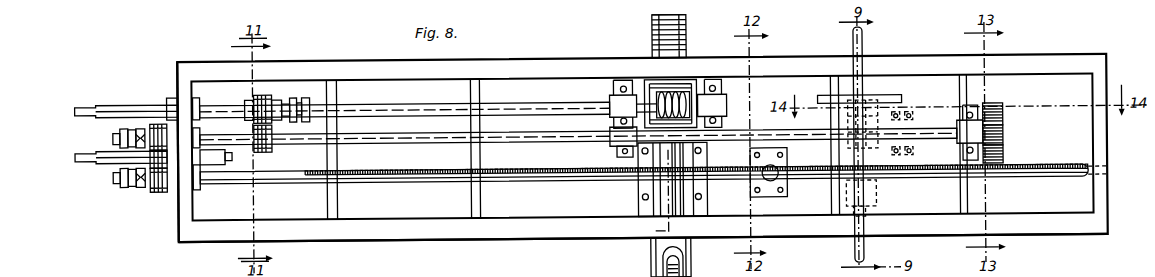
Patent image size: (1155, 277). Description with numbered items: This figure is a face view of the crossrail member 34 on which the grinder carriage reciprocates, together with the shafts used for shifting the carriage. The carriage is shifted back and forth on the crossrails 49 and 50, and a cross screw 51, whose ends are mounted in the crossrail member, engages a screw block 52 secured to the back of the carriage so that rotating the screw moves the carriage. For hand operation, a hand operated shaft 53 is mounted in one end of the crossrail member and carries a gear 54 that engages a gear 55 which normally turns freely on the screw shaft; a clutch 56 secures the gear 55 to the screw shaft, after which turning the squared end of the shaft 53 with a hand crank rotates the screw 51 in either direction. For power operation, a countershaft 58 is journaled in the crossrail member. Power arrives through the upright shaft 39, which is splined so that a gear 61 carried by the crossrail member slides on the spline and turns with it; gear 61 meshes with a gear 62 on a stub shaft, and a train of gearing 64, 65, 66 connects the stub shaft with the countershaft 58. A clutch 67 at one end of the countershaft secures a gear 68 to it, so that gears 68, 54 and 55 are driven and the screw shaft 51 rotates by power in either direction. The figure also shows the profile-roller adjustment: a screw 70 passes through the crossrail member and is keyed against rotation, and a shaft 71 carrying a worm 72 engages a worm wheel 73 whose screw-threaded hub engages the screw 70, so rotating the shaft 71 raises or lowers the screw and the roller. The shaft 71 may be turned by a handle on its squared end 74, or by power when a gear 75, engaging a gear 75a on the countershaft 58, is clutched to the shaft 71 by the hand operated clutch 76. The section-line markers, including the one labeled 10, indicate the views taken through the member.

The adjusting knob stem 10 is at (668, 15).
The crossrail member 34 is at (177, 73).
The shaft 39 is at (866, 40).
The crossrail 49 is at (385, 56).
The crossrail 50 is at (571, 238).
The cross screw 51 is at (427, 181).
The screw block 52 is at (781, 192).
The hand operated shaft 53 is at (78, 156).
The gear 54 is at (180, 150).
The gear 55 is at (160, 189).
The clutch 56 is at (125, 184).
The countershaft 58 is at (492, 131).
The gear 61 is at (845, 152).
The gear 62 is at (864, 108).
The gear 64 is at (1001, 107).
The gear 65 is at (1004, 154).
The gear 66 is at (1004, 134).
The clutch 67 is at (113, 133).
The gear 68 is at (163, 122).
The screw 70 is at (653, 40).
The shaft 71 is at (430, 102).
The worm 72 is at (612, 96).
The worm wheel 73 is at (696, 97).
The squared end 74 is at (88, 102).
The gear 75 is at (267, 93).
The gear 75a is at (273, 147).
The hand operated clutch 76 is at (306, 96).